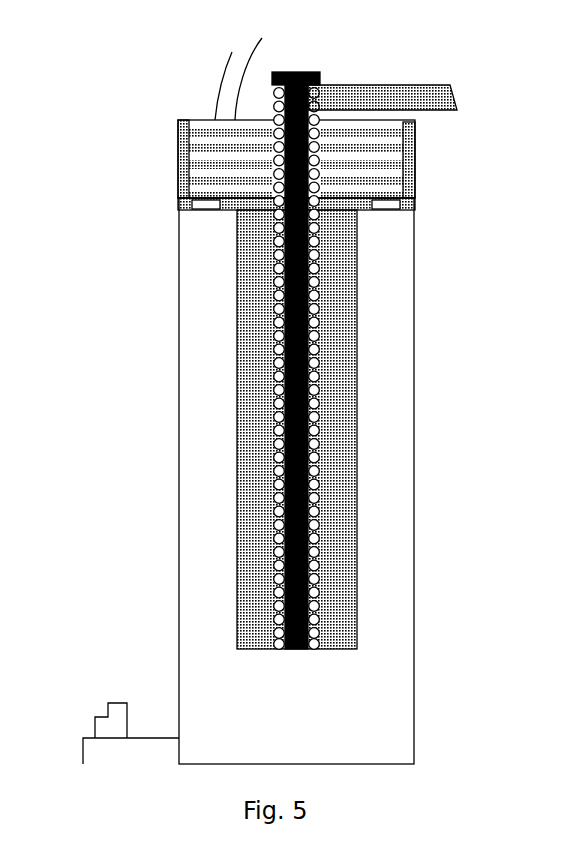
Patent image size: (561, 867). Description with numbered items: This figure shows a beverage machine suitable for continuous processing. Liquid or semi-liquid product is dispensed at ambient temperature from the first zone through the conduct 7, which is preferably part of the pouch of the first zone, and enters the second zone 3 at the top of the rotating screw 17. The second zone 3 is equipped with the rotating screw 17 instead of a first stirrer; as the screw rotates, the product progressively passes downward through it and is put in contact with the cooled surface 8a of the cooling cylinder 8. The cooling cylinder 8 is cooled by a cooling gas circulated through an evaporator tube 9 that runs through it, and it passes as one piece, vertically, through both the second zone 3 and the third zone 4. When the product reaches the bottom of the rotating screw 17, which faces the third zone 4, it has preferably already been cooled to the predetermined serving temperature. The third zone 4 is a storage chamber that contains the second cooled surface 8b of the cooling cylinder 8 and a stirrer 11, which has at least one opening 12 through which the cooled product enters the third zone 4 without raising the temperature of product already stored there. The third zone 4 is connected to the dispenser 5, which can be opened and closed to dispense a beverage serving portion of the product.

The second zone 3 is at (200, 155).
The third zone 4 is at (198, 526).
The dispenser 5 is at (100, 752).
The conduct 7 is at (258, 36).
The cooling cylinder 8 is at (318, 72).
The cooled surface 8a is at (318, 146).
The second cooled surface 8b is at (320, 335).
The evaporator tube 9 is at (458, 85).
The stirrer 11 is at (345, 528).
The opening 12 is at (380, 206).
The rotating screw 17 is at (415, 174).